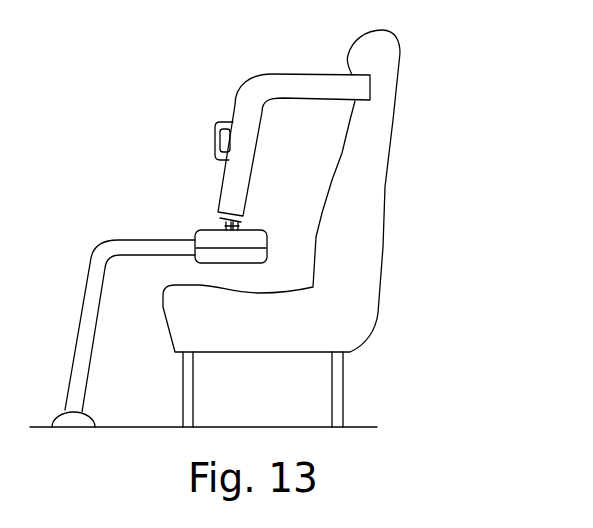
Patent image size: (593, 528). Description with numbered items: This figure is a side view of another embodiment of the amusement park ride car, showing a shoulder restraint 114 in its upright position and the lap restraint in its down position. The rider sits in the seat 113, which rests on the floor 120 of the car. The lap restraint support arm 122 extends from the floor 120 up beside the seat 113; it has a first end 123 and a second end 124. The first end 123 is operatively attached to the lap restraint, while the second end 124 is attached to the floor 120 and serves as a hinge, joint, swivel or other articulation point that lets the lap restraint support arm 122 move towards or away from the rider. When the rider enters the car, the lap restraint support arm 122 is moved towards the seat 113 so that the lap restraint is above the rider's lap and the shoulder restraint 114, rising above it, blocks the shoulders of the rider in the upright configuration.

The seat 113 is at (380, 210).
The shoulder restraint 114 is at (243, 143).
The floor 120 is at (112, 428).
The lap restraint support arm 122 is at (92, 312).
The first end 123 is at (193, 250).
The second end 124 is at (62, 412).